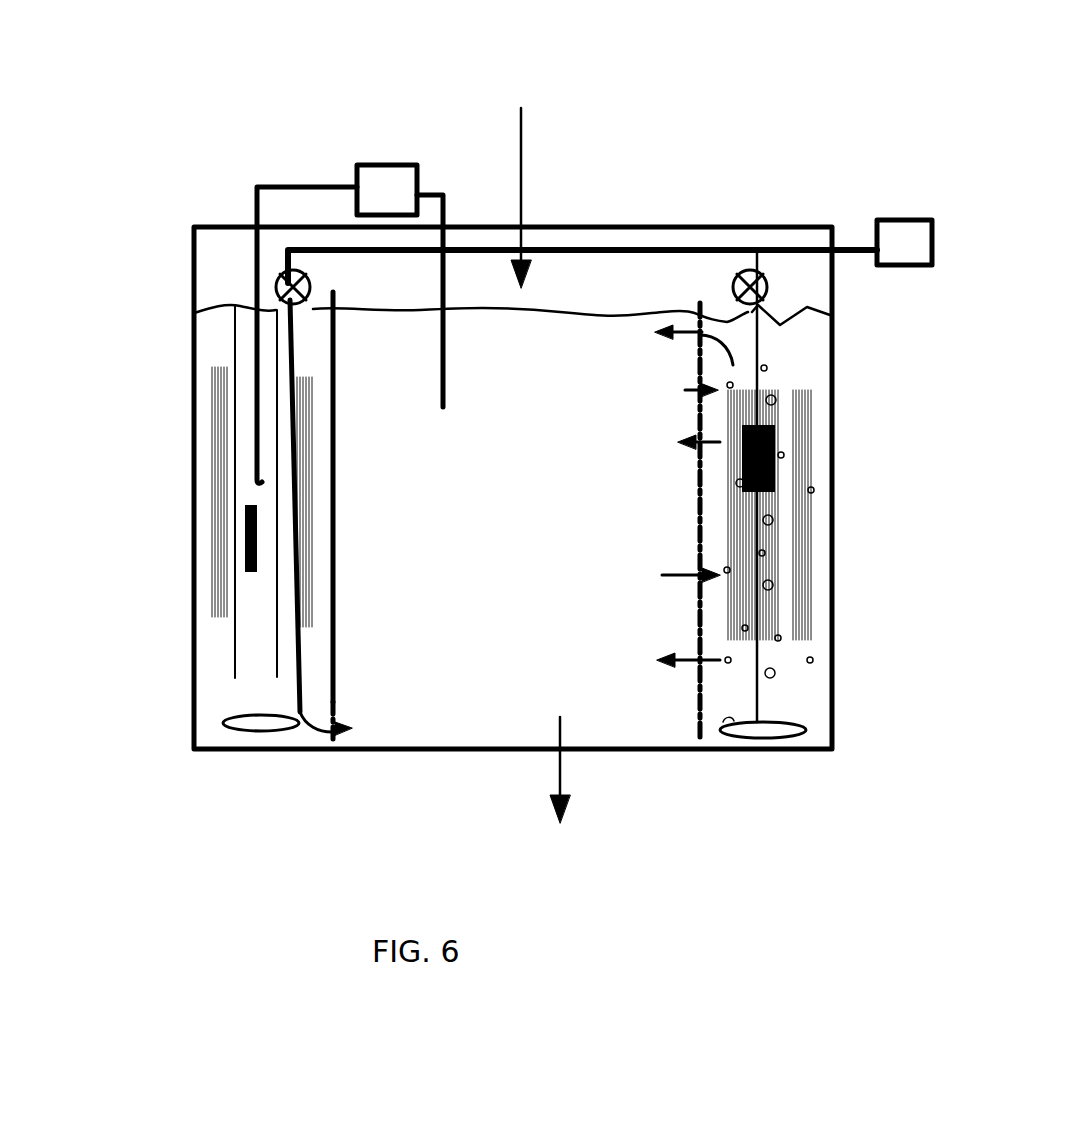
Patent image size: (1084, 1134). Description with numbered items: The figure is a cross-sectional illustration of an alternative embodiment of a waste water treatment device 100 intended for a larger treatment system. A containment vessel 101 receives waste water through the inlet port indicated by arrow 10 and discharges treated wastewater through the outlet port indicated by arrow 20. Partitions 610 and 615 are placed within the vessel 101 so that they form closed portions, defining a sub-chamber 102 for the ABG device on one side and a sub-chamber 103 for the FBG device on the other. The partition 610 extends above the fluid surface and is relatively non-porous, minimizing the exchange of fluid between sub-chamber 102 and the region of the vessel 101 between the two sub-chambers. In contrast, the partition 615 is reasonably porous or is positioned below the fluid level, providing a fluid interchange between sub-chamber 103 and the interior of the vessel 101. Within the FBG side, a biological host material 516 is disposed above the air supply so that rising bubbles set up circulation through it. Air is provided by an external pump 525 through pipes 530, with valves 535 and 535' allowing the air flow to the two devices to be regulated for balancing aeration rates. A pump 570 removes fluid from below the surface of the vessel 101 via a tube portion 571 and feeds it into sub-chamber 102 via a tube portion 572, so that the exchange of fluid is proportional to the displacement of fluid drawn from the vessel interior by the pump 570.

The waste water treatment device 100 is at (288, 132).
The inlet port 10 is at (521, 167).
The outlet port 20 is at (557, 798).
The vessel 101 is at (511, 546).
The sub-chamber 102 is at (217, 686).
The sub-chamber 103 is at (813, 693).
The biological host material 516 is at (305, 455).
The external pump 525 is at (902, 220).
The pipes 530 is at (652, 258).
The valve 535 is at (796, 239).
The valve 535' is at (191, 267).
The pump 570 is at (372, 163).
The tube portion 571 is at (452, 383).
The tube portion 572 is at (248, 425).
The partition 610 is at (333, 497).
The partition 615 is at (700, 527).